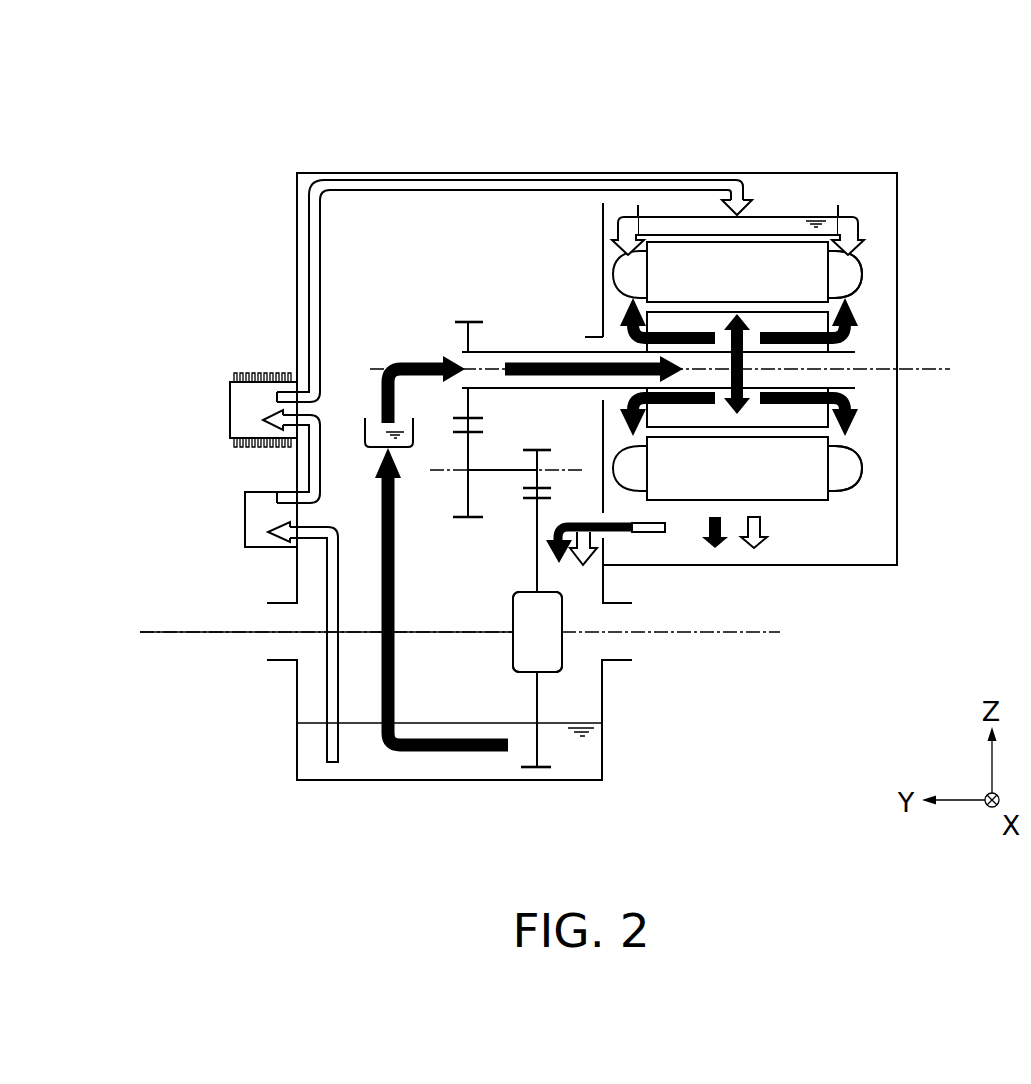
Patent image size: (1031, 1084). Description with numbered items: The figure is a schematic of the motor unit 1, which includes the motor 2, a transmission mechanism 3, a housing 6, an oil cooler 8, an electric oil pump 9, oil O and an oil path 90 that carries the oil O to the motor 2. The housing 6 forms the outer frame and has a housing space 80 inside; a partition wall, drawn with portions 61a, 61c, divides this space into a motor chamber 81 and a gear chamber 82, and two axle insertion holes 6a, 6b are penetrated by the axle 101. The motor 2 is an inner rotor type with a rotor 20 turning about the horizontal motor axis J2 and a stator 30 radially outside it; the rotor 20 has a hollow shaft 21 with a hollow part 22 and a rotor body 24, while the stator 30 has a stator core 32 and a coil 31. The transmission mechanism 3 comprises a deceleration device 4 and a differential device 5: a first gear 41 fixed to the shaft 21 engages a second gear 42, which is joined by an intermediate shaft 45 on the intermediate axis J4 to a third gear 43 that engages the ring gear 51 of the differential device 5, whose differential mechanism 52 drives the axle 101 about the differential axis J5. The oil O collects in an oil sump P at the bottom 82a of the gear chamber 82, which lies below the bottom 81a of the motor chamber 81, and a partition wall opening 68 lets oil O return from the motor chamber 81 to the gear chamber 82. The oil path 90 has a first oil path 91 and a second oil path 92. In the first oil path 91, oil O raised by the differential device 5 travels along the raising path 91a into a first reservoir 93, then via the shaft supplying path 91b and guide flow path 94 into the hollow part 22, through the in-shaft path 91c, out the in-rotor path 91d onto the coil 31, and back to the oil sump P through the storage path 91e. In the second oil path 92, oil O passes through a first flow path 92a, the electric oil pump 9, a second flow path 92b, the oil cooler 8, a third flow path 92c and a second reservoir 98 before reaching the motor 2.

The motor unit 1 is at (888, 122).
The motor 2 is at (804, 314).
The transmission mechanism 3 is at (462, 218).
The deceleration device 4 is at (451, 493).
The differential device 5 is at (566, 668).
The housing 6 is at (898, 171).
The axle insertion hole 6a is at (270, 603).
The axle insertion hole 6b is at (618, 603).
The oil cooler 8 is at (230, 405).
The electric oil pump 9 is at (245, 516).
The rotor 20 is at (778, 312).
The shaft 21 is at (512, 352).
The hollow part 22 is at (492, 358).
The rotor body 24 is at (812, 322).
The stator 30 is at (860, 264).
The coil 31 is at (862, 272).
The stator core 32 is at (815, 297).
The first gear 41 is at (468, 320).
The second gear 42 is at (458, 518).
The third gear 43 is at (530, 497).
The intermediate shaft 45 is at (498, 470).
The ring gear 51 is at (528, 770).
The differential mechanism 52 is at (513, 650).
The partition wall hook portion 61a is at (585, 337).
The partition wall upper portion 61c is at (600, 253).
The partition wall opening 68 is at (610, 537).
The housing space 80 is at (895, 204).
The motor chamber 81 is at (622, 212).
The bottom 81a is at (816, 568).
The gear chamber 82 is at (510, 217).
The bottom 82a is at (412, 782).
The oil path 90 is at (203, 236).
The first oil path 91 is at (583, 490).
The raising path 91a is at (382, 530).
The shaft supplying path 91b is at (407, 358).
The in-shaft path 91c is at (560, 360).
The in-rotor path 91d is at (847, 340).
The storage path 91e is at (723, 523).
The second oil path 92 is at (470, 432).
The first flow path 92a is at (325, 678).
The second flow path 92b is at (308, 463).
The third flow path 92c is at (408, 178).
The first reservoir 93 is at (364, 432).
The guide flow path 94 is at (437, 362).
The second reservoir 98 is at (840, 212).
The axle 101 is at (650, 634).
The motor axis J2 is at (905, 370).
The intermediate axis J4 is at (563, 468).
The differential axis J5 is at (745, 634).
The oil O is at (570, 768).
The oil sump P is at (600, 753).